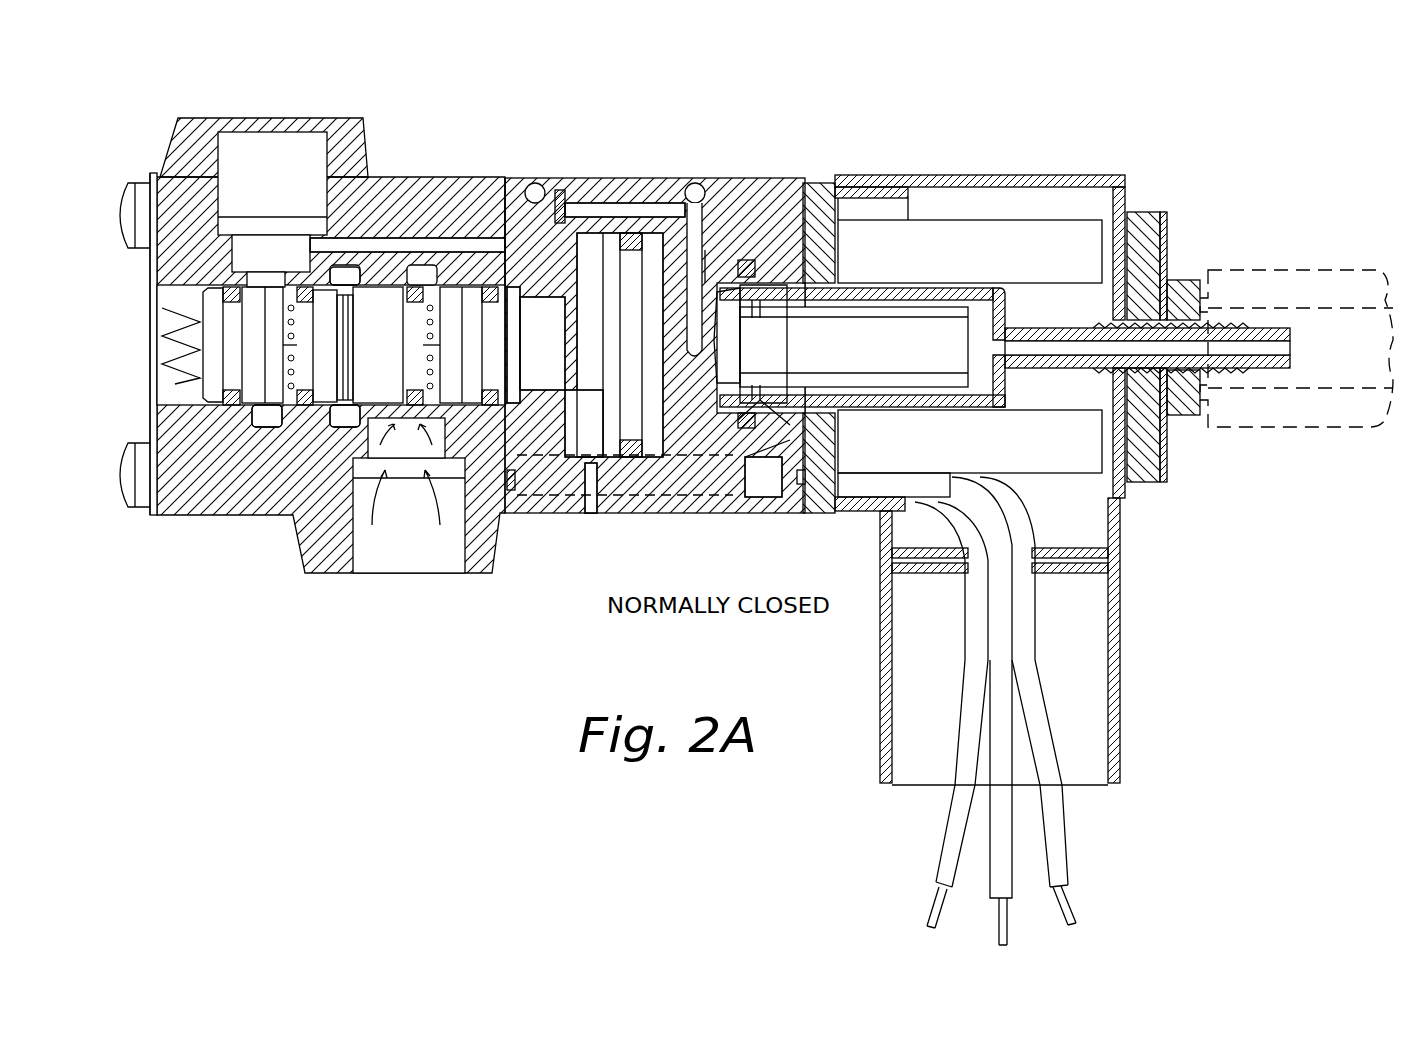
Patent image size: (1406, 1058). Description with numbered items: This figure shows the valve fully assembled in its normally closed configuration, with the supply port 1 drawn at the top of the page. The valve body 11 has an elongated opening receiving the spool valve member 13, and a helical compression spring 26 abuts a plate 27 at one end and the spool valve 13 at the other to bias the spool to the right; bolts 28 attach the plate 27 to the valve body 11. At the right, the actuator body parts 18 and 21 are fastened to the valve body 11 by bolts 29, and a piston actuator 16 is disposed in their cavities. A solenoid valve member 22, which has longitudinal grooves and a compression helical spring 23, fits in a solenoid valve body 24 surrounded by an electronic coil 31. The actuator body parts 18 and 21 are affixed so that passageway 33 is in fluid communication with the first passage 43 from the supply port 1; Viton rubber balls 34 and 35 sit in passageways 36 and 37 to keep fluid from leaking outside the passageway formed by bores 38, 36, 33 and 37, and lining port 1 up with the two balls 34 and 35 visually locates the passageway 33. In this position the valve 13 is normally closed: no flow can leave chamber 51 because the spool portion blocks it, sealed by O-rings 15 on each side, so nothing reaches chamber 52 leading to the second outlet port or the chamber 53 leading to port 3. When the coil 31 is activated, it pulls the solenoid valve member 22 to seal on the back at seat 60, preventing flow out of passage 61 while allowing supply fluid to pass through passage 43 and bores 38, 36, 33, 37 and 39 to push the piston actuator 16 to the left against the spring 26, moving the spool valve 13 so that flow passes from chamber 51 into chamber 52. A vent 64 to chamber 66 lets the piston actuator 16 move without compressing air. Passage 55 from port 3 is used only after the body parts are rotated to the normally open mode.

The supply port 1 is at (257, 115).
The port 3 is at (425, 533).
The valve body 11 is at (412, 190).
The valve member 13 is at (458, 308).
The O-rings 15 is at (153, 418).
The actuator 16 is at (647, 247).
The actuator body part 18 is at (633, 180).
The actuator body part 21 is at (512, 183).
The solenoid valve member 22 is at (852, 330).
The compression helical spring 23 is at (752, 255).
The solenoid valve body 24 is at (1087, 172).
The helical compression spring 26 is at (195, 365).
The plate 27 is at (152, 277).
The bolts 28 is at (135, 200).
The bolts 29 is at (763, 478).
The electronic coil 31 is at (920, 237).
The passageway 33 is at (593, 207).
The rubber ball 34 is at (540, 187).
The rubber ball 35 is at (697, 183).
The passageway 36 is at (543, 233).
The passageway 37 is at (695, 260).
The bore 38 is at (520, 250).
The bore 39 is at (716, 350).
The first passage 43 is at (425, 242).
The chamber 51 is at (270, 430).
The chamber 52 is at (340, 423).
The chamber 53 is at (420, 280).
The passage 55 is at (507, 492).
The seat 60 is at (987, 343).
The passage 61 is at (1212, 347).
The vent 64 is at (593, 500).
The chamber 66 is at (595, 408).